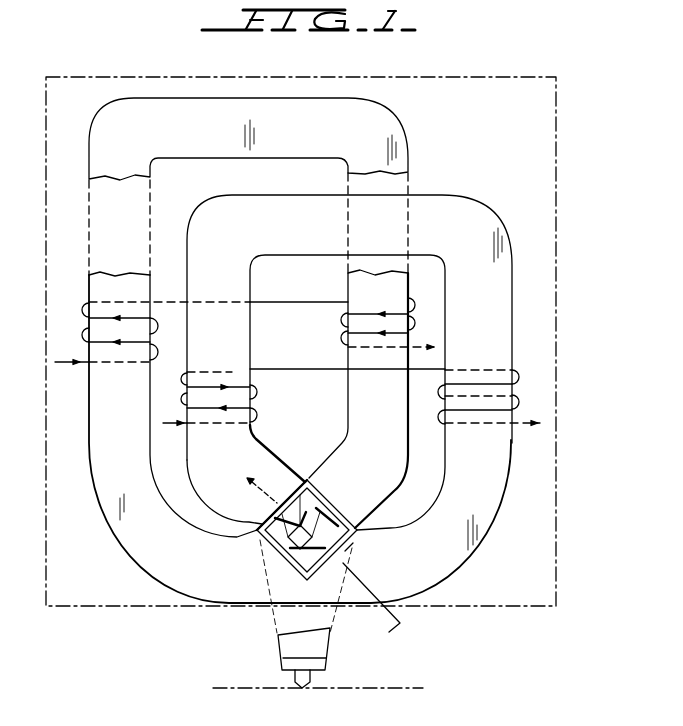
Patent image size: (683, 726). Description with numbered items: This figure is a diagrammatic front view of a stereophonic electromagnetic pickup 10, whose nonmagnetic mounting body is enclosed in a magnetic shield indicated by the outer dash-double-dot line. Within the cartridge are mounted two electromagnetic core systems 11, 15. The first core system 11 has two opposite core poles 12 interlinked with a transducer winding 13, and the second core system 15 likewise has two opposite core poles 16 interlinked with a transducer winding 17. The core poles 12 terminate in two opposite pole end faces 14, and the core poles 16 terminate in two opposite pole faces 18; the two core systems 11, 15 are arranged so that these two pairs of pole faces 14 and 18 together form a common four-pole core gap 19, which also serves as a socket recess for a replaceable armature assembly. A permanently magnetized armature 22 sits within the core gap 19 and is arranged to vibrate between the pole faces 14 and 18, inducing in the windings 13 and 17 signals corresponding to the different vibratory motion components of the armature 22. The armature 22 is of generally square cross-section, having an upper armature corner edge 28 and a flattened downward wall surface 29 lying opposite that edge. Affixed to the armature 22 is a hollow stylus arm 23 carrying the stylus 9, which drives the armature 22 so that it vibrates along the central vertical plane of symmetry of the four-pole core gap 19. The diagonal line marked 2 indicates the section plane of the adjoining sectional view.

The section line 2 is at (317, 569).
The stylus 9 is at (296, 683).
The pickup 10 is at (556, 113).
The electromagnetic core system 11 is at (210, 98).
The core poles 12 is at (408, 155).
The transducer winding 13 is at (152, 318).
The pole end faces 14 is at (320, 495).
The electromagnetic core system 15 is at (445, 207).
The core poles 16 is at (252, 282).
The transducer winding 17 is at (235, 380).
The pole faces 18 is at (264, 512).
The four-pole core gap 19 is at (340, 516).
The armature 22 is at (290, 538).
The stylus arm 23 is at (279, 641).
The upper armature corner edge 28 is at (322, 474).
The flattened downward wall surface 29 is at (340, 565).